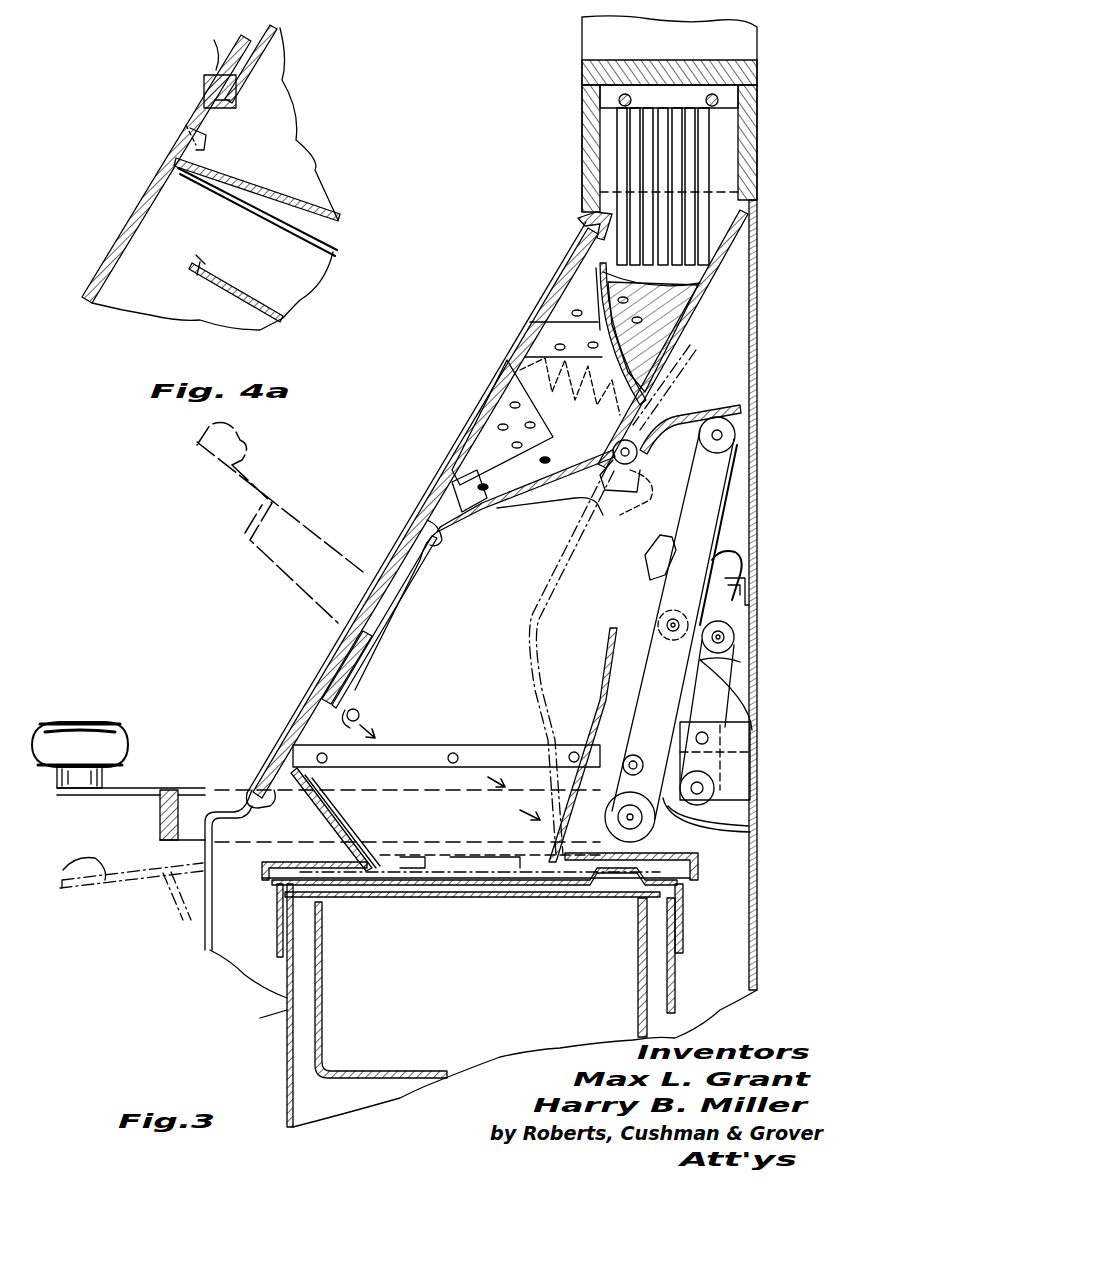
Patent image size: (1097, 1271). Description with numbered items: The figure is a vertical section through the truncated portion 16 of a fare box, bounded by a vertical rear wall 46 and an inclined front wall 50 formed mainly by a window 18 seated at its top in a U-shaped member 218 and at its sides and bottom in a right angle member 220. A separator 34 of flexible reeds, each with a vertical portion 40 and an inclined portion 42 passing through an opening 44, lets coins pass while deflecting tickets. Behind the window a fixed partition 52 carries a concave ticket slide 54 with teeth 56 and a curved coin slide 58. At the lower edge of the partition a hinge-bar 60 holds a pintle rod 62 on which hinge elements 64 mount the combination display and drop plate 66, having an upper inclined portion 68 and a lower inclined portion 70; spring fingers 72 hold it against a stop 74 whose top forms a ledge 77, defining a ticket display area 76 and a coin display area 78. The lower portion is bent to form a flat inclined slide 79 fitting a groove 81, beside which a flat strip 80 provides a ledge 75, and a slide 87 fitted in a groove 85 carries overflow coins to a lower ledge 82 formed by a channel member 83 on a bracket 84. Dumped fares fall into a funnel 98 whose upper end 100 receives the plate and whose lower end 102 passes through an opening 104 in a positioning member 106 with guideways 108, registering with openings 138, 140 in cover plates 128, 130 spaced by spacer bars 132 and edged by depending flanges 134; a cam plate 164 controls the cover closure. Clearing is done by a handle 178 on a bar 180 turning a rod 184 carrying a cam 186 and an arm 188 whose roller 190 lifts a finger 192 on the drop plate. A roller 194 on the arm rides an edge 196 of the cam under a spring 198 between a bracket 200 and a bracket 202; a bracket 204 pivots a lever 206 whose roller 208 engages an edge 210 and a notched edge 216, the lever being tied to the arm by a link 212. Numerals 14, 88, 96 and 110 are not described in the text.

In FIG. 3, the machine 14 is at (266, 1055).
In FIG. 3, the truncated portion 16 is at (774, 336).
In FIG. 4A, the window 18 is at (150, 180).
In FIG. 3, the separator 34 is at (607, 168).
In FIG. 3, the vertical portion 40 is at (730, 160).
In FIG. 3, the inclined portion 42 is at (700, 215).
In FIG. 3, the opening 44 is at (614, 216).
In FIG. 3, the vertical rear wall 46 is at (760, 445).
In FIG. 3, the inclined front wall 50 is at (478, 392).
In FIG. 3, the fixed partition 52 is at (670, 318).
In FIG. 3, the slide 54 is at (590, 290).
In FIG. 3, the teeth 56 is at (535, 372).
In FIG. 3, the slide 58 is at (570, 325).
In FIG. 3, the hinge-bar 60 is at (655, 410).
In FIG. 3, the pintle rod 62 is at (640, 455).
In FIG. 3, the hinge elements 64 is at (625, 485).
In FIG. 3, the combination display and drop plate 66 is at (488, 536).
In FIG. 3, the inclined portion 68 is at (525, 510).
In FIG. 4A, the inclined portion 70 is at (262, 45).
In FIG. 3, the inclined portion 70 is at (385, 620).
In FIG. 3, the spring fingers 72 is at (560, 530).
In FIG. 3, the stop 74 is at (432, 525).
In FIG. 3, the ledge 75 is at (355, 630).
In FIG. 3, the display area 76 is at (470, 456).
In FIG. 3, the ledge 77 is at (445, 485).
In FIG. 3, the display area 78 is at (386, 594).
In FIG. 4A, the flat inclined slide 79 is at (188, 132).
In FIG. 3, the flat strip 80 is at (365, 686).
In FIG. 4A, the groove 81 is at (216, 101).
In FIG. 3, the ledge 82 is at (345, 712).
In FIG. 3, the channel member 83 is at (376, 720).
In FIG. 3, the bracket 84 is at (340, 722).
In FIG. 4A, the groove 85 is at (214, 45).
In FIG. 4A, the slide 87 is at (205, 80).
In FIG. 4A, the plate 88 is at (290, 180).
In FIG. 3, the arrow 96 is at (394, 740).
In FIG. 3, the funnel 98 is at (450, 769).
In FIG. 3, the upper end 100 is at (484, 752).
In FIG. 3, the lower end 102 is at (425, 870).
In FIG. 3, the opening 104 is at (360, 860).
In FIG. 3, the positioning member 106 is at (205, 870).
In FIG. 3, the guideways 108 is at (275, 898).
In FIG. 3, the container 110 is at (287, 1002).
In FIG. 3, the plate 128 is at (575, 898).
In FIG. 3, the plate 130 is at (615, 905).
In FIG. 3, the spacer bars 132 is at (280, 920).
In FIG. 3, the depending flanges 134 is at (684, 938).
In FIG. 3, the opening 138 is at (520, 898).
In FIG. 3, the opening 140 is at (540, 898).
In FIG. 3, the cam plate 164 is at (470, 900).
In FIG. 3, the handle 178 is at (98, 709).
In FIG. 3, the bar 180 is at (160, 824).
In FIG. 3, the rod 184 is at (600, 860).
In FIG. 3, the cam 186 is at (650, 830).
In FIG. 3, the arm 188 is at (750, 680).
In FIG. 3, the roller 190 is at (742, 412).
In FIG. 3, the finger 192 is at (756, 390).
In FIG. 3, the roller 194 is at (600, 735).
In FIG. 3, the edge 196 is at (640, 755).
In FIG. 3, the spring 198 is at (748, 555).
In FIG. 3, the bracket 200 is at (650, 560).
In FIG. 3, the bracket 202 is at (752, 585).
In FIG. 3, the bracket 204 is at (737, 740).
In FIG. 3, the lever 206 is at (710, 708).
In FIG. 3, the roller 208 is at (718, 792).
In FIG. 3, the edge 210 is at (752, 812).
In FIG. 3, the link 212 is at (735, 630).
In FIG. 3, the notched edge 216 is at (752, 753).
In FIG. 3, the U-shaped member 218 is at (578, 220).
In FIG. 3, the right angle member 220 is at (255, 790).